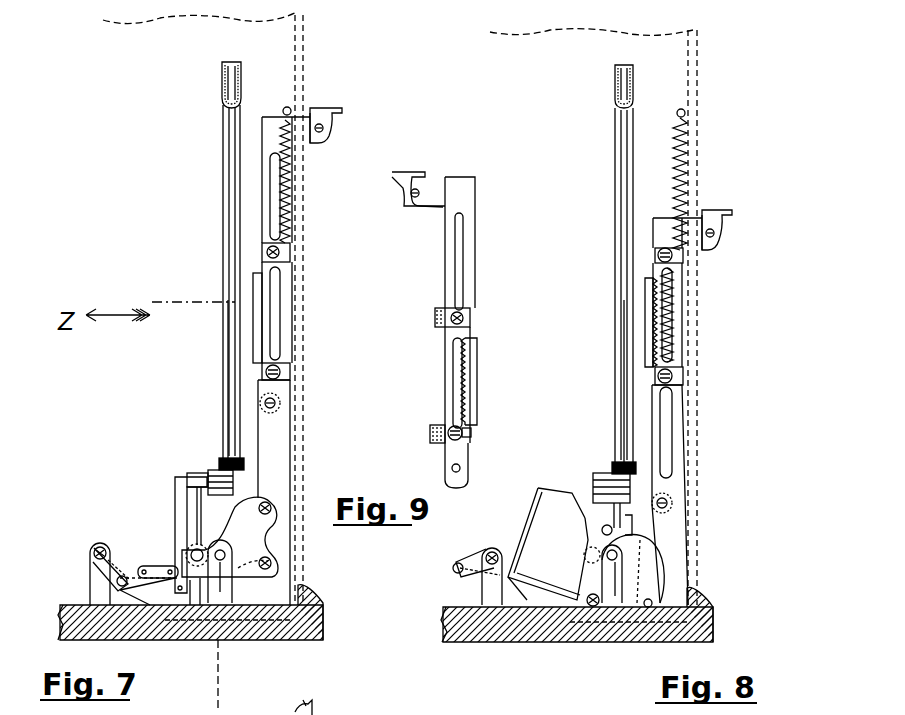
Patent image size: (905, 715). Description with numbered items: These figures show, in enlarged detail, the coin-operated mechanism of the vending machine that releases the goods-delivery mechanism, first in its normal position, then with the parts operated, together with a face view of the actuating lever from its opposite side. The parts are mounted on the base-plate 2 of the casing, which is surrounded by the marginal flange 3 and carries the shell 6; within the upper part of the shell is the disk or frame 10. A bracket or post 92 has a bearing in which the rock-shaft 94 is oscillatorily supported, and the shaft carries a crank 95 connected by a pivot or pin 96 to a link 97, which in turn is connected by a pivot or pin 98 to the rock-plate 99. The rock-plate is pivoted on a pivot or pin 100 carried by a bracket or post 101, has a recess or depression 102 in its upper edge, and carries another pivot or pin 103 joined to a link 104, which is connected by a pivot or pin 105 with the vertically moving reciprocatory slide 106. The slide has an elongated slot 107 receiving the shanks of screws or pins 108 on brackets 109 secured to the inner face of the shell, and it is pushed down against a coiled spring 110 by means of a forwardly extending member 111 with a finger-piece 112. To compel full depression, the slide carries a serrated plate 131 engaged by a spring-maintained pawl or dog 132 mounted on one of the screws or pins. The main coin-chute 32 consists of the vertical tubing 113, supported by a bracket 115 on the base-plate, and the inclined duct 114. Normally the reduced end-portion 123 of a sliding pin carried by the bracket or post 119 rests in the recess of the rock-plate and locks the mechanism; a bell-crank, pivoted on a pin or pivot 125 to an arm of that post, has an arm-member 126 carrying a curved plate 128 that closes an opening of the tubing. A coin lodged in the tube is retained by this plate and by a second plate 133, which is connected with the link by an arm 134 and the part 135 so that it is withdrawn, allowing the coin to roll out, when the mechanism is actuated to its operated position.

In FIG. 7, the base-plate 2 is at (293, 627).
In FIG. 8, the base-plate 2 is at (468, 609).
In FIG. 7, the marginal flange 3 is at (310, 590).
In FIG. 8, the marginal flange 3 is at (700, 603).
In FIG. 7, the shell 6 is at (304, 42).
In FIG. 8, the shell 6 is at (698, 62).
In FIG. 7, the disk or frame 10 is at (180, 301).
In FIG. 7, the main coin-chute 32 is at (207, 72).
In FIG. 8, the main coin-chute 32 is at (647, 85).
In FIG. 7, the bracket or post 92 is at (92, 578).
In FIG. 8, the bracket or post 92 is at (488, 596).
In FIG. 7, the rock-shaft 94 is at (93, 553).
In FIG. 8, the rock-shaft 94 is at (492, 552).
In FIG. 7, the crank 95 is at (118, 570).
In FIG. 8, the crank 95 is at (478, 556).
In FIG. 7, the pivot or pin 96 is at (112, 582).
In FIG. 8, the pivot or pin 96 is at (453, 570).
In FIG. 7, the link 97 is at (173, 575).
In FIG. 8, the link 97 is at (527, 600).
In FIG. 7, the pivot or pin 98 is at (272, 563).
In FIG. 8, the pivot or pin 98 is at (590, 606).
In FIG. 7, the rock-plate 99 is at (254, 550).
In FIG. 8, the rock-plate 99 is at (665, 580).
In FIG. 7, the pivot or pin 100 is at (224, 554).
In FIG. 8, the pivot or pin 100 is at (618, 557).
In FIG. 7, the bracket or post 101 is at (223, 587).
In FIG. 8, the bracket or post 101 is at (612, 600).
In FIG. 7, the recess or depression 102 is at (193, 552).
In FIG. 8, the recess or depression 102 is at (602, 530).
In FIG. 7, the pivot or pin 103 is at (272, 506).
In FIG. 7, the link 104 is at (272, 448).
In FIG. 8, the link 104 is at (665, 540).
In FIG. 7, the pivot or pin 105 is at (276, 403).
In FIG. 8, the pivot or pin 105 is at (669, 503).
In FIG. 7, the reciprocatory slide 106 is at (293, 285).
In FIG. 9, the reciprocatory slide 106 is at (476, 223).
In FIG. 8, the reciprocatory slide 106 is at (683, 305).
In FIG. 7, the elongated opening or slot 107 is at (270, 180).
In FIG. 9, the elongated opening or slot 107 is at (463, 249).
In FIG. 8, the elongated opening or slot 107 is at (664, 285).
In FIG. 7, the screws or pins 108 is at (280, 250).
In FIG. 9, the screws or pins 108 is at (462, 318).
In FIG. 8, the screws or pins 108 is at (657, 255).
In FIG. 7, the brackets 109 is at (290, 258).
In FIG. 9, the brackets 109 is at (435, 318).
In FIG. 8, the brackets 109 is at (684, 262).
In FIG. 7, the coiled spring 110 is at (292, 180).
In FIG. 8, the coiled spring 110 is at (678, 155).
In FIG. 7, the forwardly extending member 111 is at (312, 145).
In FIG. 9, the forwardly extending member 111 is at (437, 197).
In FIG. 8, the forwardly extending member 111 is at (705, 250).
In FIG. 7, the finger-piece 112 is at (336, 108).
In FIG. 9, the finger-piece 112 is at (403, 172).
In FIG. 8, the finger-piece 112 is at (724, 210).
In FIG. 7, the tubing part of coin-chute 113 is at (225, 225).
In FIG. 8, the tubing part of coin-chute 113 is at (617, 165).
In FIG. 7, the inclined duct part of coin-chute 114 is at (222, 88).
In FIG. 8, the inclined duct part of coin-chute 114 is at (615, 90).
In FIG. 8, the bracket 115 is at (632, 524).
In FIG. 7, the bracket or post 119 is at (197, 598).
In FIG. 8, the bracket or post 119 is at (582, 578).
In FIG. 7, the reduced end-portion of pin 123 is at (195, 548).
In FIG. 8, the reduced end-portion of pin 123 is at (585, 555).
In FIG. 7, the pin or pivot 125 is at (176, 482).
In FIG. 7, the arm-member of bell-crank 126 is at (218, 456).
In FIG. 8, the arm-member of bell-crank 126 is at (588, 381).
In FIG. 7, the curved plate 128 is at (222, 458).
In FIG. 8, the curved plate 128 is at (614, 462).
In FIG. 7, the serrated plate 131 is at (255, 322).
In FIG. 9, the serrated plate 131 is at (477, 360).
In FIG. 8, the serrated plate 131 is at (647, 318).
In FIG. 9, the spring-maintained pawl or dog 132 is at (472, 433).
In FIG. 7, the second plate 133 is at (210, 480).
In FIG. 8, the second plate 133 is at (596, 478).
In FIG. 7, the arm 134 is at (192, 486).
In FIG. 8, the arm 134 is at (540, 500).
In FIG. 7, the part 135 is at (170, 556).